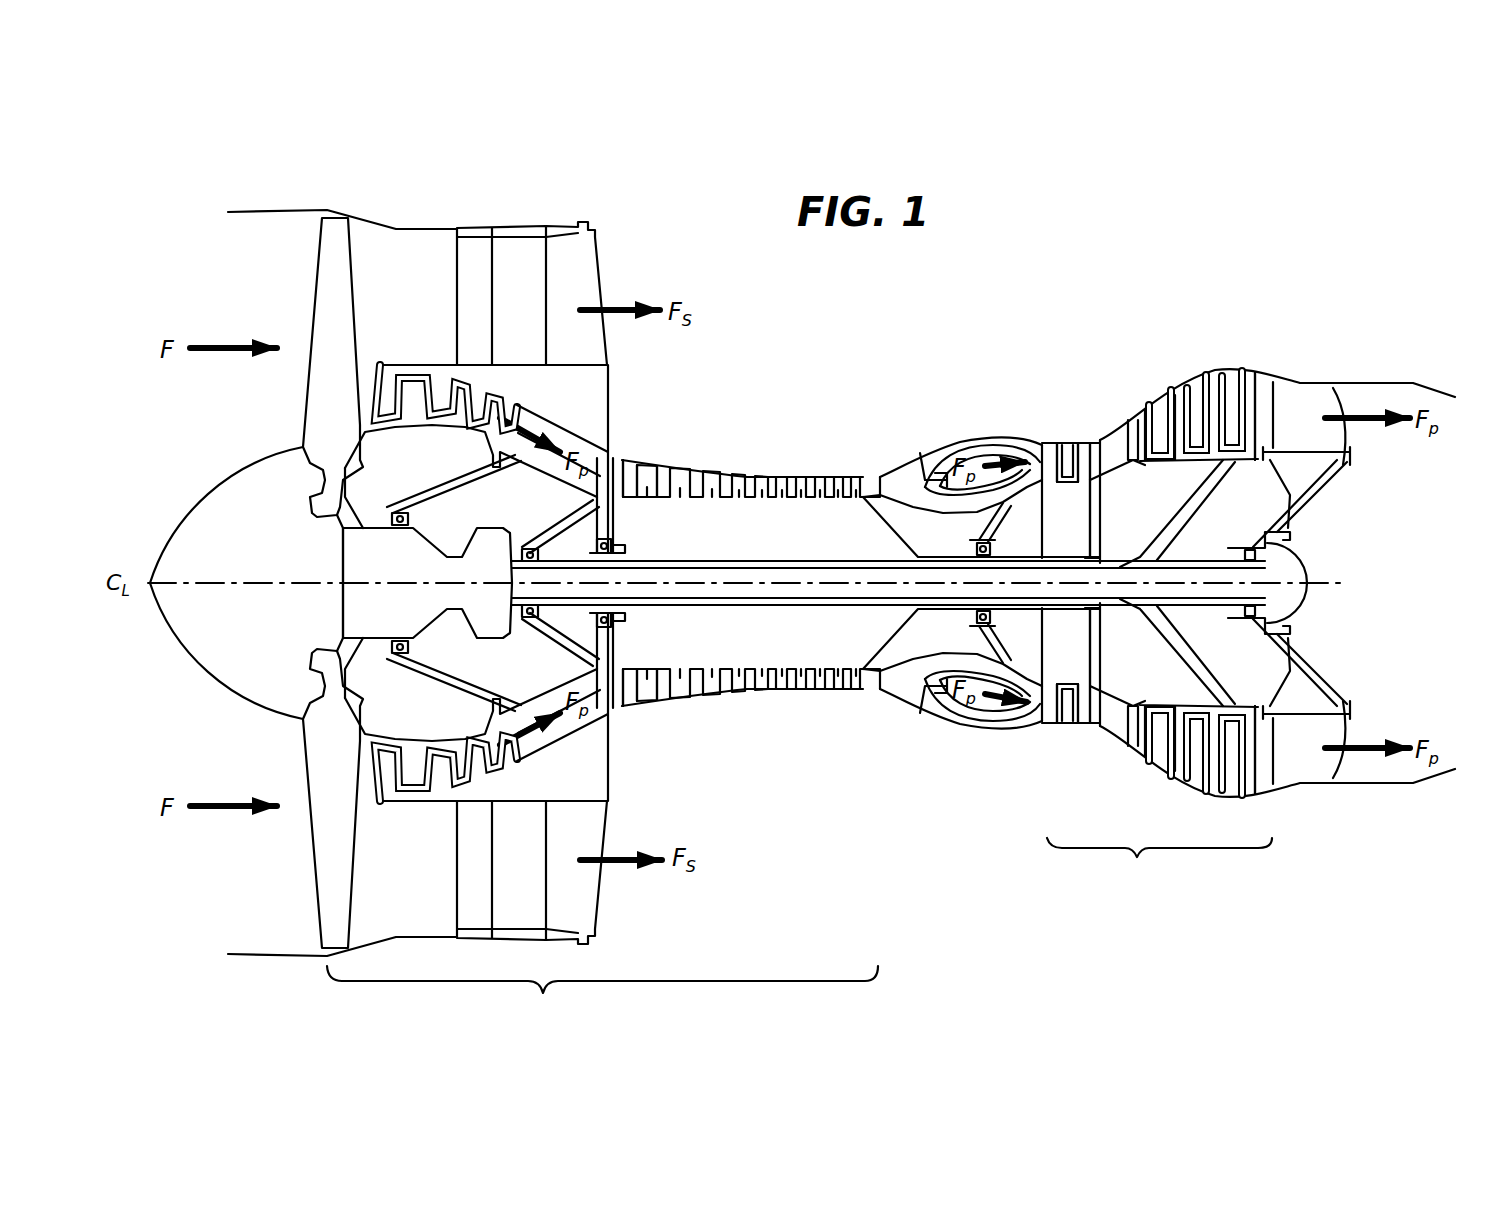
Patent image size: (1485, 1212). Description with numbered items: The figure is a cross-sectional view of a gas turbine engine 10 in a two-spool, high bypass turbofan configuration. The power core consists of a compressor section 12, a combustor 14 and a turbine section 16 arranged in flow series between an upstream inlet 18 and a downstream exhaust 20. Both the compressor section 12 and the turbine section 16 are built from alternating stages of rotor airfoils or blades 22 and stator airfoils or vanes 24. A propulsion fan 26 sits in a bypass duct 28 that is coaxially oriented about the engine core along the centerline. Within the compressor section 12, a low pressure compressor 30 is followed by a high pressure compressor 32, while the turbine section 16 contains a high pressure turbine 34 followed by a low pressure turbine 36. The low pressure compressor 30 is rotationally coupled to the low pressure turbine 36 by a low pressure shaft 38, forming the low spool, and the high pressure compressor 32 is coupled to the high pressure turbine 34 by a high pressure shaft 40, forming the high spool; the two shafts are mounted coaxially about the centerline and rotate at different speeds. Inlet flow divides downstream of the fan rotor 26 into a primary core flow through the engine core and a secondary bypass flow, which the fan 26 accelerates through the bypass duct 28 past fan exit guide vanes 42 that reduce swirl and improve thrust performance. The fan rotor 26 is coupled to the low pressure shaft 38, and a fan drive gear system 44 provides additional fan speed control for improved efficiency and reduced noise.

The gas turbine engine 10 is at (192, 180).
The compressor section 12 is at (602, 997).
The combustor 14 is at (985, 440).
The turbine section 16 is at (1159, 868).
The upstream inlet 18 is at (213, 450).
The downstream exhaust 20 is at (1397, 527).
The rotor airfoils (blades) 22 is at (665, 470).
The stator airfoils (vanes) 24 is at (714, 473).
The propulsion fan (fan rotor) 26 is at (330, 305).
The bypass duct 28 is at (432, 306).
The low pressure compressor 30 is at (557, 757).
The high pressure compressor 32 is at (762, 710).
The high pressure turbine 34 is at (1072, 735).
The low pressure turbine 36 is at (1158, 773).
The low pressure shaft 38 is at (795, 593).
The high pressure shaft 40 is at (885, 620).
The fan exit guide vanes 42 is at (468, 248).
The fan drive gear system 44 is at (498, 528).